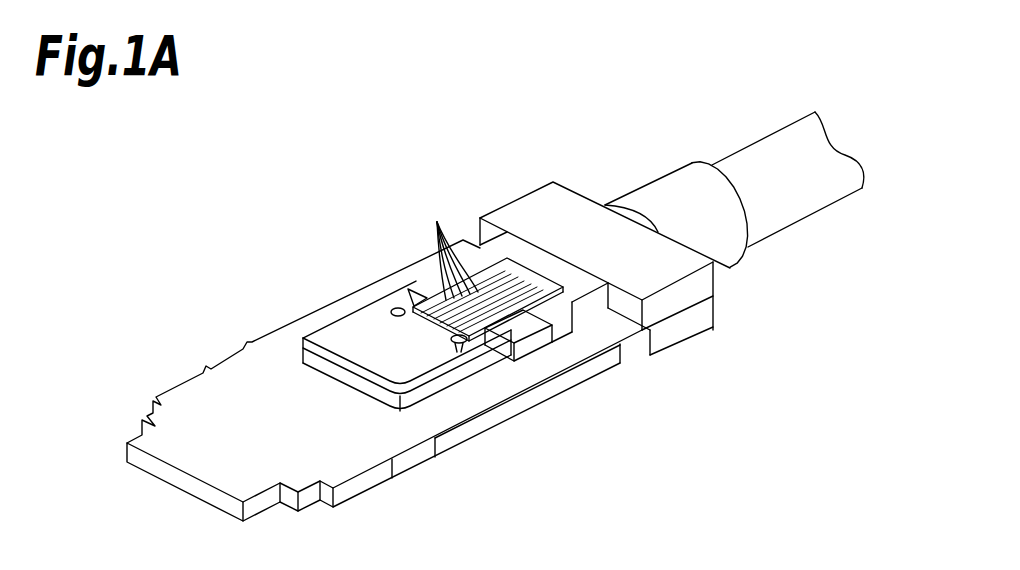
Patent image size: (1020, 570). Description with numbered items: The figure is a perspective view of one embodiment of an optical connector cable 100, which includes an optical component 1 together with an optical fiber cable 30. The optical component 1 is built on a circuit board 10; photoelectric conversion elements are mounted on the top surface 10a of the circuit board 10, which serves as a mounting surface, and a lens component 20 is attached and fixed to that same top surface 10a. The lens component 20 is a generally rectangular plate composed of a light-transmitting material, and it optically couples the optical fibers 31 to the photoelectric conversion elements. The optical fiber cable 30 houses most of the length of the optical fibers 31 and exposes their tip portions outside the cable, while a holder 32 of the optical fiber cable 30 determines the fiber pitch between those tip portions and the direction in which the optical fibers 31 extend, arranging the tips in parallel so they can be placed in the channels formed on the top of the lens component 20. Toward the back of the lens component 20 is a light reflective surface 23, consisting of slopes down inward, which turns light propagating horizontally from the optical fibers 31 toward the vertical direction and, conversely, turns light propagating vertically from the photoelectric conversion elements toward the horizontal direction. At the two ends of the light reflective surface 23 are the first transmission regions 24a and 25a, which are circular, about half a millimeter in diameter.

The optical connector cable 100 is at (470, 196).
The optical component 1 is at (266, 257).
The circuit board 10 is at (262, 357).
The top surface 10a is at (530, 372).
The lens component 20 is at (355, 318).
The light reflective surface 23 is at (410, 318).
The first transmission region 24a is at (461, 347).
The first transmission region 25a is at (398, 307).
The optical fiber cable 30 is at (752, 283).
The optical fibers 31 is at (448, 245).
The holder 32 is at (685, 328).